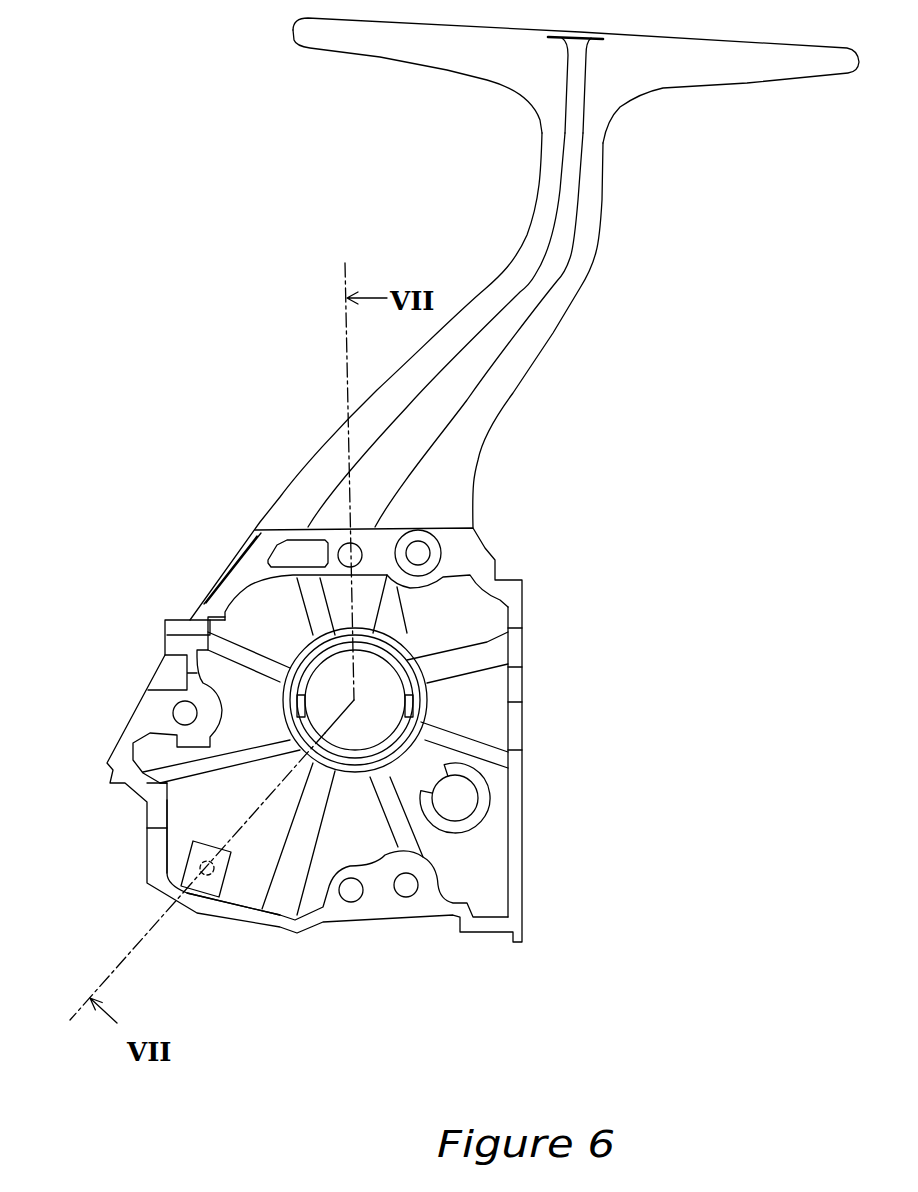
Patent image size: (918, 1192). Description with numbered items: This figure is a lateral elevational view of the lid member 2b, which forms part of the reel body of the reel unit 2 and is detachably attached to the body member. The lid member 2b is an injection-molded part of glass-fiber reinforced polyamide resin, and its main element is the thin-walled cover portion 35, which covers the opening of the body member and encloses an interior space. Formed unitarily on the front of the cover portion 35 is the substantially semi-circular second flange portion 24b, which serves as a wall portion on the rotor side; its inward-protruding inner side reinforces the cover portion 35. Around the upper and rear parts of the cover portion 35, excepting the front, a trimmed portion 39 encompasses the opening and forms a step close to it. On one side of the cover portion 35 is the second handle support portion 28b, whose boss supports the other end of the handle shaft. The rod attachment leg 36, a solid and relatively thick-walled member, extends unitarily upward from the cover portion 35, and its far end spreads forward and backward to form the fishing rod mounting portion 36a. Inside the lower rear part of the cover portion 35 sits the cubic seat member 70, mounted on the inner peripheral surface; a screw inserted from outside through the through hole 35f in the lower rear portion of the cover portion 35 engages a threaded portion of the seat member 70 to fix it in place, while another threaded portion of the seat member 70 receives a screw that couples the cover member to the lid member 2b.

The reel unit 2 is at (533, 553).
The lid member 2b is at (560, 583).
The second flange portion 24b is at (515, 750).
The second handle support portion 28b is at (412, 655).
The cover portion 35 is at (185, 826).
The through hole 35f is at (200, 870).
The rod attachment leg 36 is at (513, 356).
The fishing rod mounting portion 36a is at (727, 68).
The trimmed portion 39 is at (237, 912).
The seat member 70 is at (205, 877).